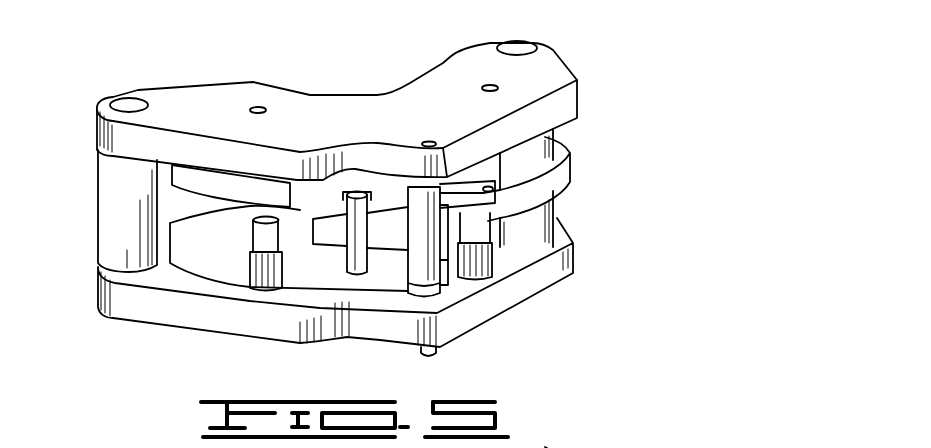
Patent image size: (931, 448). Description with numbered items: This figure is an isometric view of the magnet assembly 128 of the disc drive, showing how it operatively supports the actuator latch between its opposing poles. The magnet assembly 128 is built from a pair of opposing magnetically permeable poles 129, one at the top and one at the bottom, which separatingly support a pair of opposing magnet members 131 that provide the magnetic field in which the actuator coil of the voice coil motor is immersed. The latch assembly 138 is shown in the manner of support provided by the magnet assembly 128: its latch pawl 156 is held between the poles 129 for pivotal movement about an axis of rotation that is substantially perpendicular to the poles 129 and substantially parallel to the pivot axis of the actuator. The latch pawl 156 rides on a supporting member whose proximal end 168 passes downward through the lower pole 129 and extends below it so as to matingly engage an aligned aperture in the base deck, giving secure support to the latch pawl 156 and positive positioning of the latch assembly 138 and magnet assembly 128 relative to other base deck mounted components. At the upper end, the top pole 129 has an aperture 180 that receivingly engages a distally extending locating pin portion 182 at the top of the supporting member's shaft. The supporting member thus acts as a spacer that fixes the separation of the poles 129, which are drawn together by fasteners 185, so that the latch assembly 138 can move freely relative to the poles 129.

The magnet assembly 128 is at (578, 171).
The magnetically permeable pole 129 is at (580, 93).
The magnet member 131 is at (560, 137).
The latch assembly 138 is at (402, 204).
The latch pawl 156 is at (437, 275).
The proximal end 168 is at (430, 358).
The aperture 180 is at (428, 141).
The locating pin portion 182 is at (547, 447).
The fastener 185 is at (127, 106).